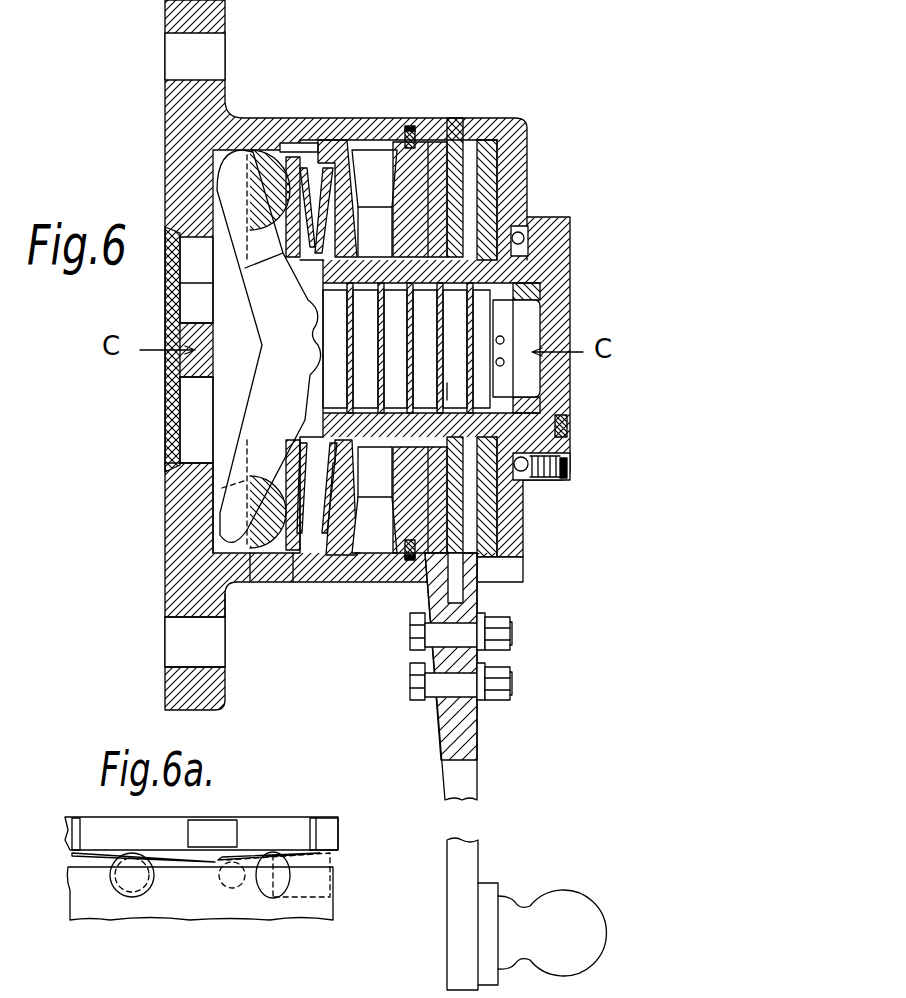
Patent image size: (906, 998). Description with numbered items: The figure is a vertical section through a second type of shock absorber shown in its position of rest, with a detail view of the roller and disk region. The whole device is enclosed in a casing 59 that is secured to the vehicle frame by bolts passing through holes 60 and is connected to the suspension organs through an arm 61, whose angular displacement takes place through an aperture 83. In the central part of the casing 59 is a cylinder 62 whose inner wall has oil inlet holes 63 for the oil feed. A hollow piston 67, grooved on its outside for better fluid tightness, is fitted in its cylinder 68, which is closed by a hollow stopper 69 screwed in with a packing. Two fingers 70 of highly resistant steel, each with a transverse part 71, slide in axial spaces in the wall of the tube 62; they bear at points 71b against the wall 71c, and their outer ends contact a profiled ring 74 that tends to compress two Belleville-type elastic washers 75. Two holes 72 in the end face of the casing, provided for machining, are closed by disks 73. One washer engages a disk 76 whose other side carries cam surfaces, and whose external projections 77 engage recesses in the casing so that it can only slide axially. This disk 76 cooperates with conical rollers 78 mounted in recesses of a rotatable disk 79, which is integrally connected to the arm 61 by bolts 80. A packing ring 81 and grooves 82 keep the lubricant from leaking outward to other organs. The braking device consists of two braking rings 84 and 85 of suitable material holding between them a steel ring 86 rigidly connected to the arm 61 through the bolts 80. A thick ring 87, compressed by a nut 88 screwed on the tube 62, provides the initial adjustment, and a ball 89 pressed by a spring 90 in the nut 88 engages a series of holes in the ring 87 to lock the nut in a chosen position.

In FIG. 6, the casing 59 is at (185, 532).
In FIG. 6, the holes 60 is at (178, 650).
In FIG. 6, the arm 61 is at (455, 792).
In FIG. 6, the cylinder 62 is at (497, 530).
In FIG. 6, the oil inlet holes 63 is at (500, 332).
In FIG. 6, the hollow piston 67 is at (447, 383).
In FIG. 6, the cylinder 68 is at (500, 388).
In FIG. 6, the hollow stopper 69 is at (553, 300).
In FIG. 6, the fingers 70 is at (222, 184).
In FIG. 6, the transverse part 71 is at (250, 555).
In FIG. 6, the bearing points 71b is at (165, 597).
In FIG. 6, the wall 71c is at (180, 511).
In FIG. 6, the holes 72 is at (187, 442).
In FIG. 6, the disks 73 is at (173, 412).
In FIG. 6, the profiled ring 74 is at (282, 560).
In FIG. 6, the elastic washers 75 is at (300, 172).
In FIG. 6, the disk 76 is at (340, 165).
In FIG. 6a, the disk 76 is at (287, 830).
In FIG. 6, the external projections 77 is at (353, 118).
In FIG. 6, the conical rollers 78 is at (355, 553).
In FIG. 6a, the conical rollers 78 is at (248, 860).
In FIG. 6, the rotatable disk 79 is at (383, 152).
In FIG. 6a, the rotatable disk 79 is at (193, 897).
In FIG. 6, the bolts 80 is at (435, 687).
In FIG. 6, the packing ring 81 is at (394, 160).
In FIG. 6, the grooves 82 is at (425, 200).
In FIG. 6, the aperture 83 is at (510, 570).
In FIG. 6, the braking ring 84 is at (455, 163).
In FIG. 6, the braking ring 85 is at (527, 117).
In FIG. 6, the steel ring 86 is at (486, 180).
In FIG. 6, the thick ring 87 is at (508, 173).
In FIG. 6, the nut 88 is at (533, 230).
In FIG. 6, the ball 89 is at (523, 487).
In FIG. 6, the spring 90 is at (563, 483).